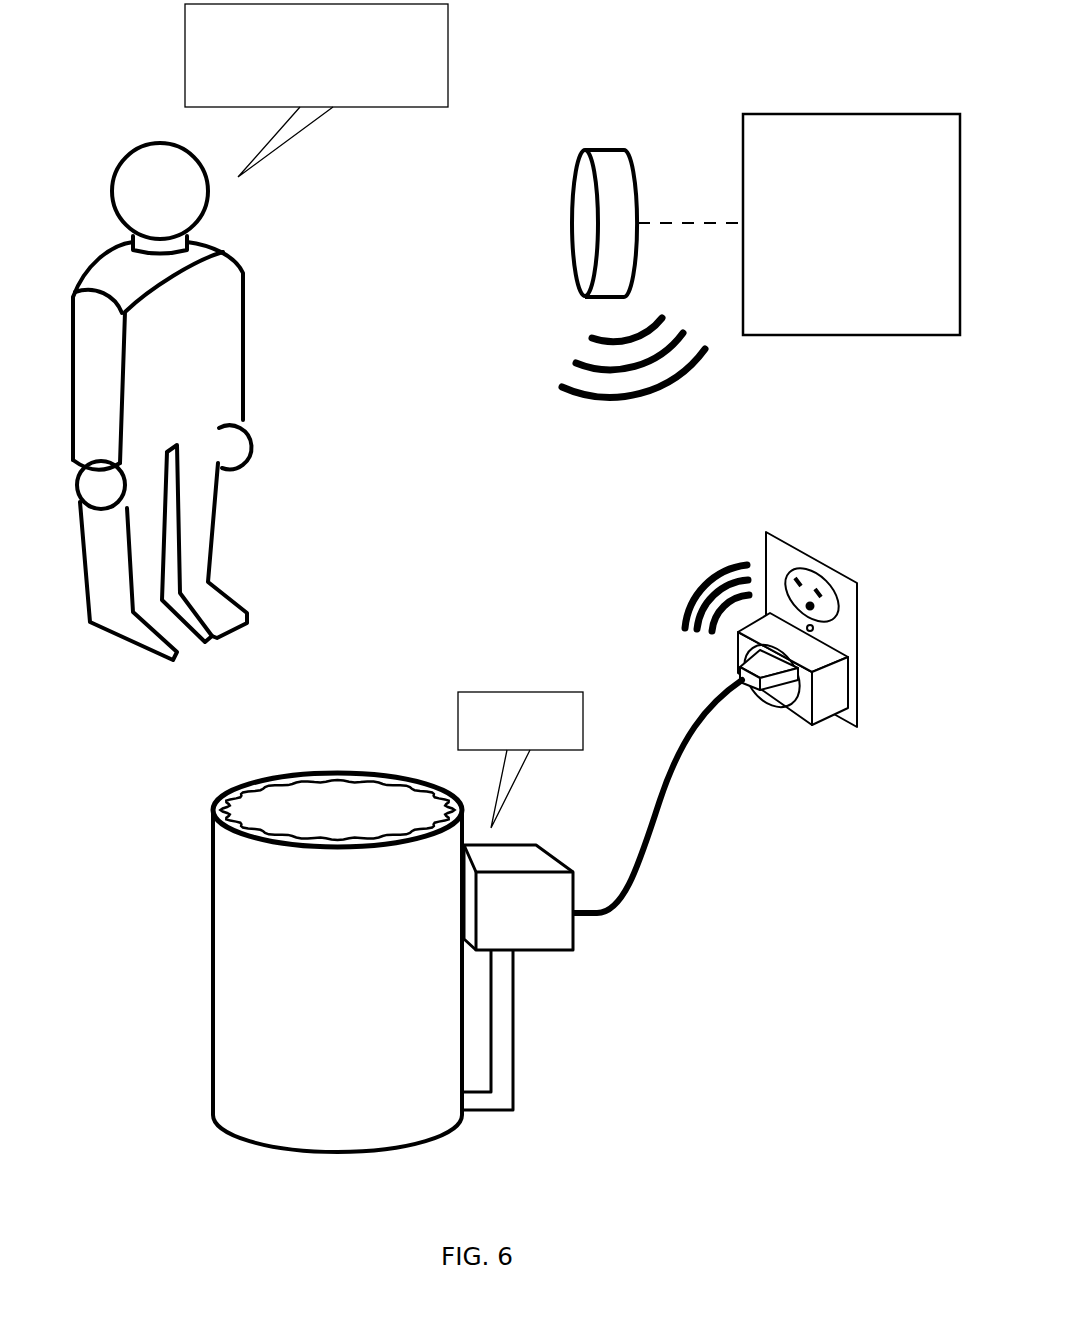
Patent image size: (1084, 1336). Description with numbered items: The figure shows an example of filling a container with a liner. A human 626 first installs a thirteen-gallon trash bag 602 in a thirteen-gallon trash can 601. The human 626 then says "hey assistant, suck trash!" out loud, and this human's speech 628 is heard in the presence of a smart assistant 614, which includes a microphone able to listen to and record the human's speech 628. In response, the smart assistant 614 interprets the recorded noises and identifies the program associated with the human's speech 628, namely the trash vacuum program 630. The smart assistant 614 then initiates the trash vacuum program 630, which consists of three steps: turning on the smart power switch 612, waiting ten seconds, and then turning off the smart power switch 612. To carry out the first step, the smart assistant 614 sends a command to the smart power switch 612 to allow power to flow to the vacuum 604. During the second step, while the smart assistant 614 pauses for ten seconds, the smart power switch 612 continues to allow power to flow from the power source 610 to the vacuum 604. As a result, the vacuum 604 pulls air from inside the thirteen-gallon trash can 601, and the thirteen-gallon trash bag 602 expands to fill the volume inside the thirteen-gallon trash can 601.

The 13-gallon trash can 601 is at (320, 990).
The 13-gallon trash bag 602 is at (404, 835).
The vacuum 604 is at (507, 936).
The power source 610 is at (847, 598).
The smart power switch 612 is at (832, 693).
The smart assistant 614 is at (608, 167).
The human 626 is at (128, 157).
The human's speech 628 is at (407, 82).
The trash vacuum program 630 is at (938, 140).